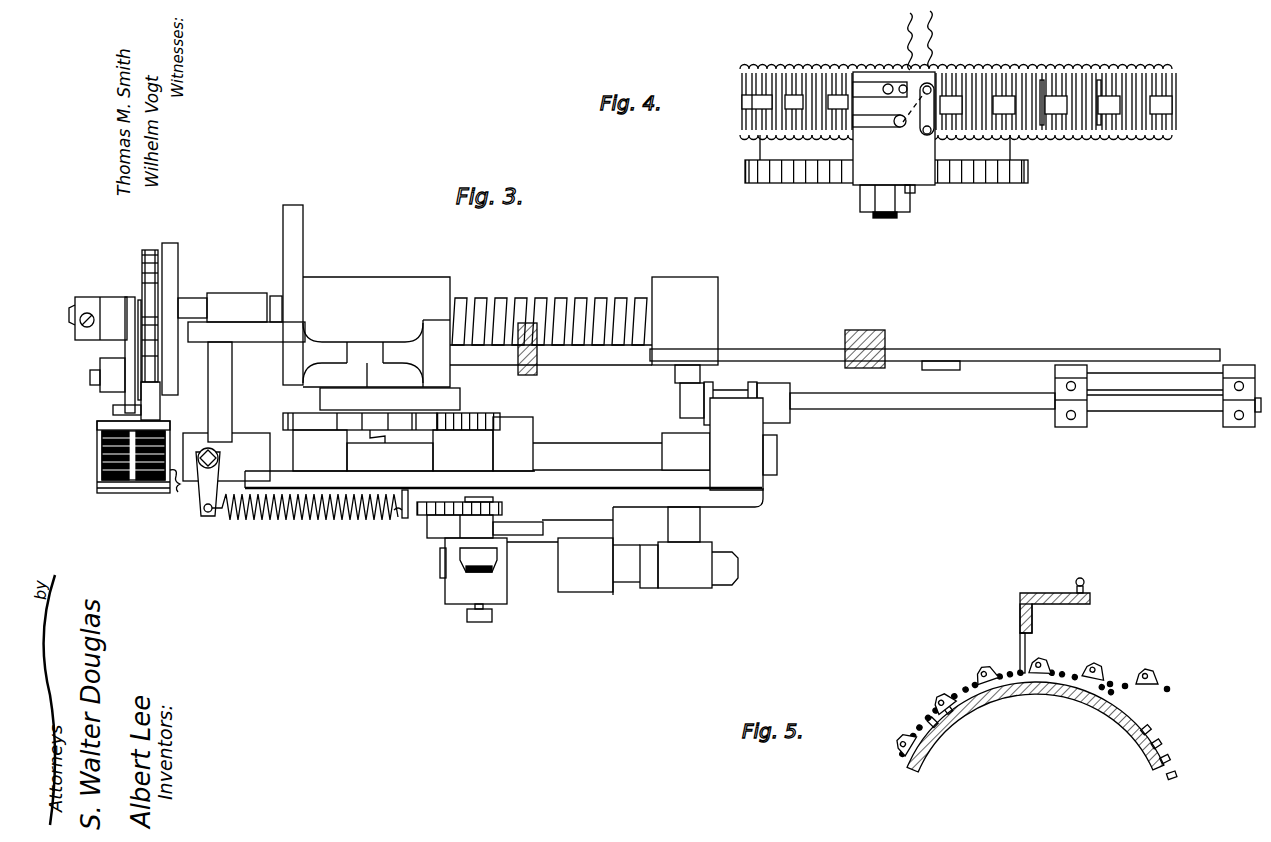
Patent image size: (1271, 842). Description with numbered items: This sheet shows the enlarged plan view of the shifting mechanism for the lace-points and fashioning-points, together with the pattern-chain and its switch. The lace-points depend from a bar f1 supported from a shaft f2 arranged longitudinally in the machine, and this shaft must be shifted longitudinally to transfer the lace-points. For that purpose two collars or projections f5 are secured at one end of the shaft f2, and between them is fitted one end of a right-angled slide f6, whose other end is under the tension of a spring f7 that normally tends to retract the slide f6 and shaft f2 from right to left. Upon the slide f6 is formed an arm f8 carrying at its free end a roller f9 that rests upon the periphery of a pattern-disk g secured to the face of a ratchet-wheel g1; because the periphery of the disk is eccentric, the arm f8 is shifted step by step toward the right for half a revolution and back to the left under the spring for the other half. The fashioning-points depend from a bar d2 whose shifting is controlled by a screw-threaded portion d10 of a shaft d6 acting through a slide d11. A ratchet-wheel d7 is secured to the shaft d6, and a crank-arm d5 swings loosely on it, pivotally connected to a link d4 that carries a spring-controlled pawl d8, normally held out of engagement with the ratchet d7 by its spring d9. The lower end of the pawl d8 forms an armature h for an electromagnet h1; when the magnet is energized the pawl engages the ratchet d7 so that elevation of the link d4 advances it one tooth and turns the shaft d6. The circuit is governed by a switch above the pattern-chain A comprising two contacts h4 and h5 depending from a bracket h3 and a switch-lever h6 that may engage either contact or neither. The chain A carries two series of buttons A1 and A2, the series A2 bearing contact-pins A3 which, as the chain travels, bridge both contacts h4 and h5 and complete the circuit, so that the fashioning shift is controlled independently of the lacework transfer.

In FIG. 3, the bar d2 is at (580, 362).
In FIG. 3, the link d4 is at (114, 407).
In FIG. 3, the crank-arm d5 is at (128, 300).
In FIG. 3, the shaft d6 is at (67, 312).
In FIG. 3, the ratchet-wheel d7 is at (152, 252).
In FIG. 3, the pawl d8 is at (148, 393).
In FIG. 3, the spring d9 is at (118, 426).
In FIG. 3, the screw-threaded portion d10 is at (513, 300).
In FIG. 3, the slide d11 is at (357, 353).
In FIG. 3, the bar f1 is at (1173, 377).
In FIG. 3, the shaft f2 is at (997, 397).
In FIG. 3, the collars f5 is at (710, 383).
In FIG. 3, the right-angled slide f6 is at (720, 433).
In FIG. 3, the spring f7 is at (305, 521).
In FIG. 3, the arm f8 is at (597, 532).
In FIG. 3, the roller f9 is at (532, 532).
In FIG. 3, the pattern-disk g is at (447, 521).
In FIG. 3, the ratchet-wheel g1 is at (422, 517).
In FIG. 3, the armature h is at (100, 456).
In FIG. 3, the electromagnet h1 is at (147, 472).
In FIG. 4, the bracket h3 is at (925, 177).
In FIG. 5, the bracket h3 is at (1073, 602).
In FIG. 4, the contact h4 is at (858, 85).
In FIG. 5, the contact h4 is at (1050, 580).
In FIG. 4, the contact h5 is at (885, 128).
In FIG. 4, the switch-lever h6 is at (927, 108).
In FIG. 5, the switch-lever h6 is at (1088, 594).
In FIG. 4, the pattern-chain A is at (1042, 68).
In FIG. 5, the pattern-chain A is at (1170, 689).
In FIG. 4, the button A1 is at (1107, 97).
In FIG. 5, the button A1 is at (1023, 668).
In FIG. 4, the button A2 is at (758, 102).
In FIG. 5, the button A2 is at (910, 733).
In FIG. 4, the contact-pin A3 is at (837, 120).
In FIG. 5, the contact-pin A3 is at (1092, 672).